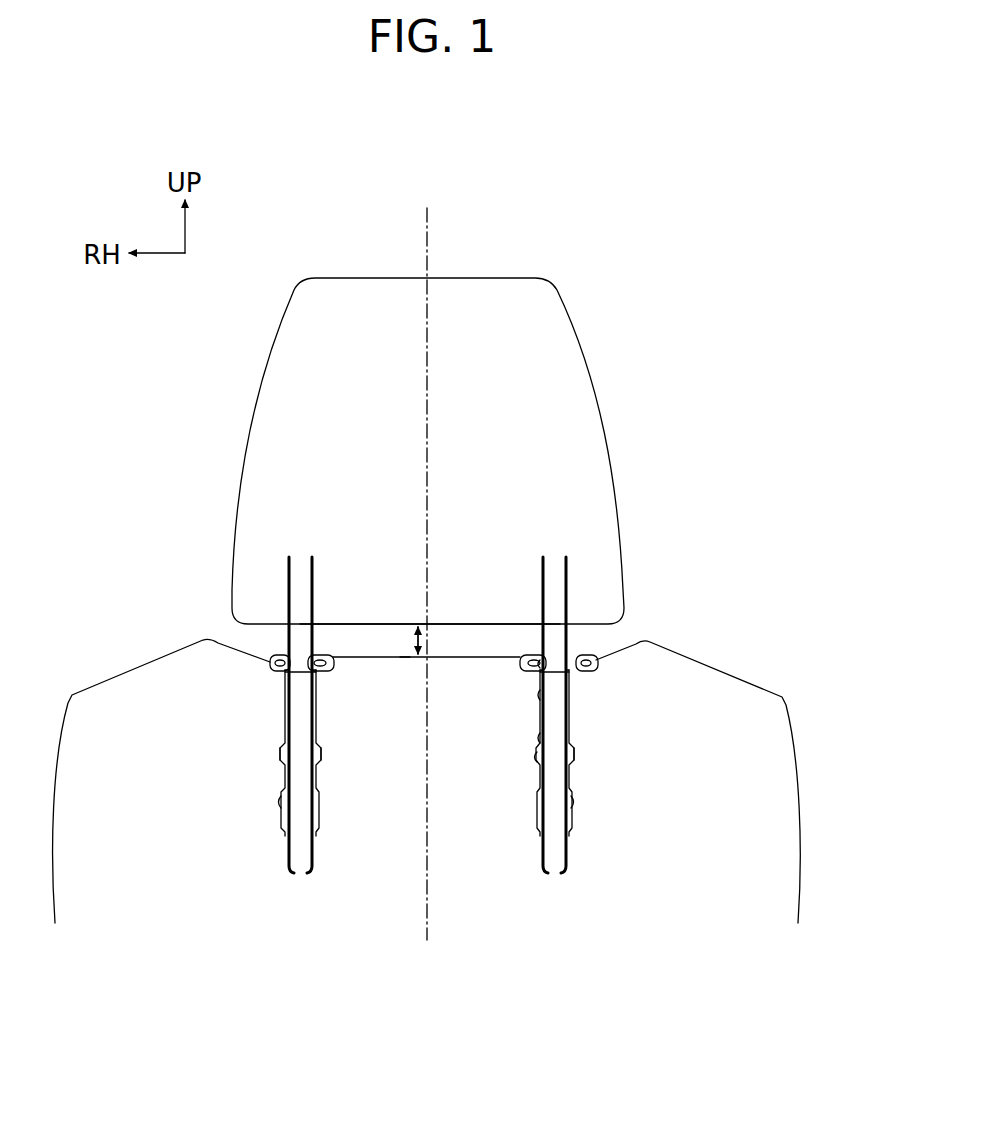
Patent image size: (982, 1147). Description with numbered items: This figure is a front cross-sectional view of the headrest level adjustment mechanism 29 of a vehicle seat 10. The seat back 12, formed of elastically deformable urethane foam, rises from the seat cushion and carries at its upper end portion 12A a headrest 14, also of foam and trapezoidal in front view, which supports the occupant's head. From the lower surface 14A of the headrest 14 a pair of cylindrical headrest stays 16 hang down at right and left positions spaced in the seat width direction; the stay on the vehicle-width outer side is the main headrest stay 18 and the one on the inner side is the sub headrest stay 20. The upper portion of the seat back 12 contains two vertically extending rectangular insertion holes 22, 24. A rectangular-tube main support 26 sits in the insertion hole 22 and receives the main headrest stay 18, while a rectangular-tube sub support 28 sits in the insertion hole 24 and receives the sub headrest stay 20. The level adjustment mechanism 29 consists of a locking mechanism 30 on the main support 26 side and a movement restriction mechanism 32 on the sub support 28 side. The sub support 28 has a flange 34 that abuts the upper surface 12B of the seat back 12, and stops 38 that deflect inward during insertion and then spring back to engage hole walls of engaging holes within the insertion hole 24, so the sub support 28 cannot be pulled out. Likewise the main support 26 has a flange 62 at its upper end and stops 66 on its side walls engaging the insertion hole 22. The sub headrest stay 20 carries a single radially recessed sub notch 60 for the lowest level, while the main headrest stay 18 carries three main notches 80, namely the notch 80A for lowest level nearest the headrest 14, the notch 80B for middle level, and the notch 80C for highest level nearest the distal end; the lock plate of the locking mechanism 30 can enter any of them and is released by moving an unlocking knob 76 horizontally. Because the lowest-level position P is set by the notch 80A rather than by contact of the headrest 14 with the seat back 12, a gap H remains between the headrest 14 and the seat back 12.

The vehicle seat 10 is at (707, 268).
The seat back 12 is at (762, 671).
The upper end portion of seat back 12A is at (712, 675).
The upper surface of seat back 12B is at (400, 650).
The headrest 14 is at (600, 426).
The lower surface of headrest 14A is at (352, 630).
The headrest stays 16 is at (425, 700).
The main headrest stay 18 is at (570, 573).
The sub headrest stay 20 is at (287, 573).
The insertion hole 22 is at (572, 802).
The insertion hole 24 is at (288, 802).
The main support 26 is at (578, 708).
The sub support 28 is at (283, 710).
The level adjustment mechanism 29 is at (226, 635).
The locking mechanism 30 is at (503, 670).
The movement restriction mechanism 32 is at (337, 665).
The flange 34 is at (270, 660).
The stops 38 is at (280, 753).
The sub notch 60 is at (292, 683).
The flange 62 is at (538, 667).
The stops 66 is at (574, 746).
The unlocking knob 76 is at (600, 658).
The main notches 80 is at (491, 697).
The notch for lowest level 80A is at (512, 655).
The notch for middle level 80B is at (543, 693).
The notch for highest level 80C is at (543, 737).
The gap H is at (416, 648).
The lowest-level position P is at (707, 407).